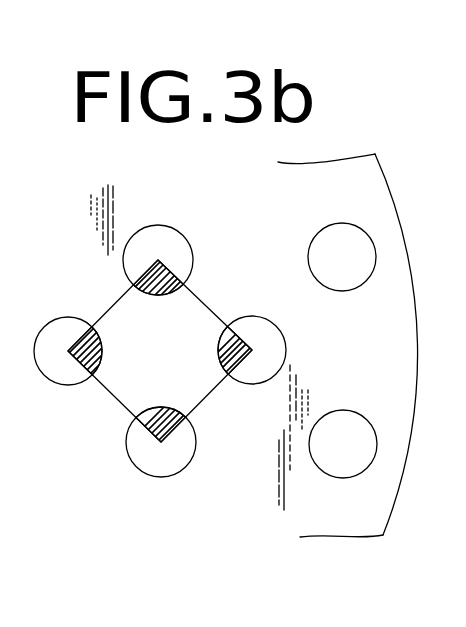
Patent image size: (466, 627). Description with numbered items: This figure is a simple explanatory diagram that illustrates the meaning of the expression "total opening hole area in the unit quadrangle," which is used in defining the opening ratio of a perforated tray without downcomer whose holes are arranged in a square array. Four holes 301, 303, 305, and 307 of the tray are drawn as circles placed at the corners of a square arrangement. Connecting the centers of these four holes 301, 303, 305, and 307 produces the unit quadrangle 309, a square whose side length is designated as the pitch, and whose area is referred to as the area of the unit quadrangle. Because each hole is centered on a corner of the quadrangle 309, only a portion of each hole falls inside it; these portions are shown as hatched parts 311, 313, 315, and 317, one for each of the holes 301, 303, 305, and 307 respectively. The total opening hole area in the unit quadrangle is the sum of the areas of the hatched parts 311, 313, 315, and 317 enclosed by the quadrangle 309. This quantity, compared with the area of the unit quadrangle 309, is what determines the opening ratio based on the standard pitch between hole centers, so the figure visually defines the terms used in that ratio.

The hole 301 is at (163, 235).
The hole 303 is at (67, 322).
The hole 305 is at (163, 465).
The hole 307 is at (270, 350).
The quadrangle 309 is at (207, 306).
The hatched part 311 is at (132, 294).
The hatched part 313 is at (96, 380).
The hatched part 315 is at (138, 410).
The hatched part 317 is at (218, 360).